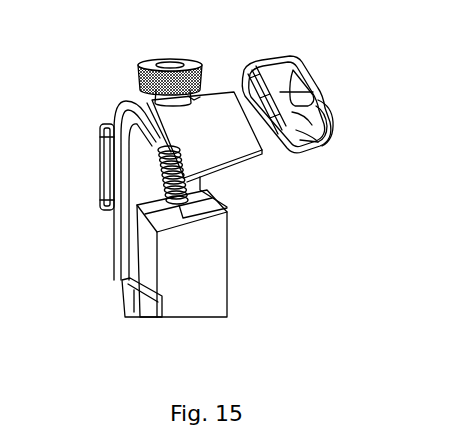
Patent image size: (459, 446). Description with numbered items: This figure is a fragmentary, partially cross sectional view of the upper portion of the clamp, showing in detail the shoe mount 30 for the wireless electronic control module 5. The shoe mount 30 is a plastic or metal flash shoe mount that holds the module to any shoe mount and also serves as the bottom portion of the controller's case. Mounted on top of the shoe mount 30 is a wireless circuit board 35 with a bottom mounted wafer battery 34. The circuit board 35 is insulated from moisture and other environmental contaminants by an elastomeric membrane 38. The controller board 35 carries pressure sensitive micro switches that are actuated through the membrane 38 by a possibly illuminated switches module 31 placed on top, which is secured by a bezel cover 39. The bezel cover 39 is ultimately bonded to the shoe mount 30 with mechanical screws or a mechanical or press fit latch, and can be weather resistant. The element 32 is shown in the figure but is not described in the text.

The wireless electronic control module 5 is at (325, 90).
The shoe mount 30 is at (160, 152).
The switches module 31 is at (282, 84).
The sliding plate 32 is at (262, 152).
The wafer battery 34 is at (300, 156).
The wireless circuit board 35 is at (306, 149).
The elastomeric membrane 38 is at (305, 130).
The bezel cover 39 is at (338, 118).